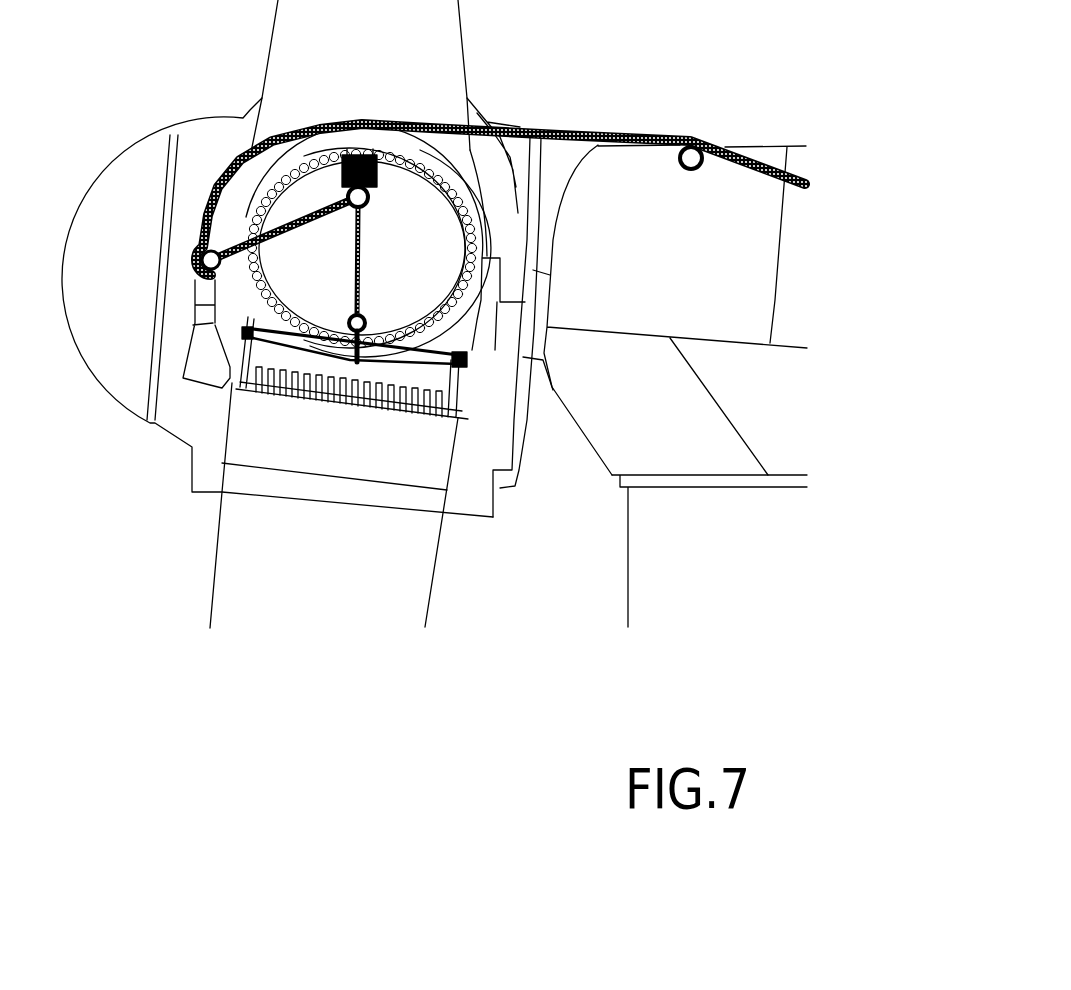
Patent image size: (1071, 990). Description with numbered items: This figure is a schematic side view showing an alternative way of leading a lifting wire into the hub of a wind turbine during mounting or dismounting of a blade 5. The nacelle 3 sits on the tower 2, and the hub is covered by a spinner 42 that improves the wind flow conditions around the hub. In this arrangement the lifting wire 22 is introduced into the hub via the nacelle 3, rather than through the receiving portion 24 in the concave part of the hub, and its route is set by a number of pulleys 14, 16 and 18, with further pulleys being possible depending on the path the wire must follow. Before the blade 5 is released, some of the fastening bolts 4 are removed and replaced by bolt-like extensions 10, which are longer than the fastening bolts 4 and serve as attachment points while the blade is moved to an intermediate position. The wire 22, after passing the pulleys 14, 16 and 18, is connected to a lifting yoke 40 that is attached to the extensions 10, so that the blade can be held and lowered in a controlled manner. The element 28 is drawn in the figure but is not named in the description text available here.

The tower 2 is at (625, 588).
The nacelle 3 is at (768, 145).
The fastening bolts 4 is at (352, 418).
The blade 5 is at (413, 595).
The bolt-like extensions 10 is at (458, 383).
The pulley 14 is at (375, 198).
The pulley 16 is at (247, 241).
The pulley 18 is at (691, 158).
The wire 22 is at (365, 258).
The receiving portion 24 is at (205, 308).
The housing 28 is at (518, 435).
The lifting yoke 40 is at (380, 321).
The spinner 42 is at (210, 123).